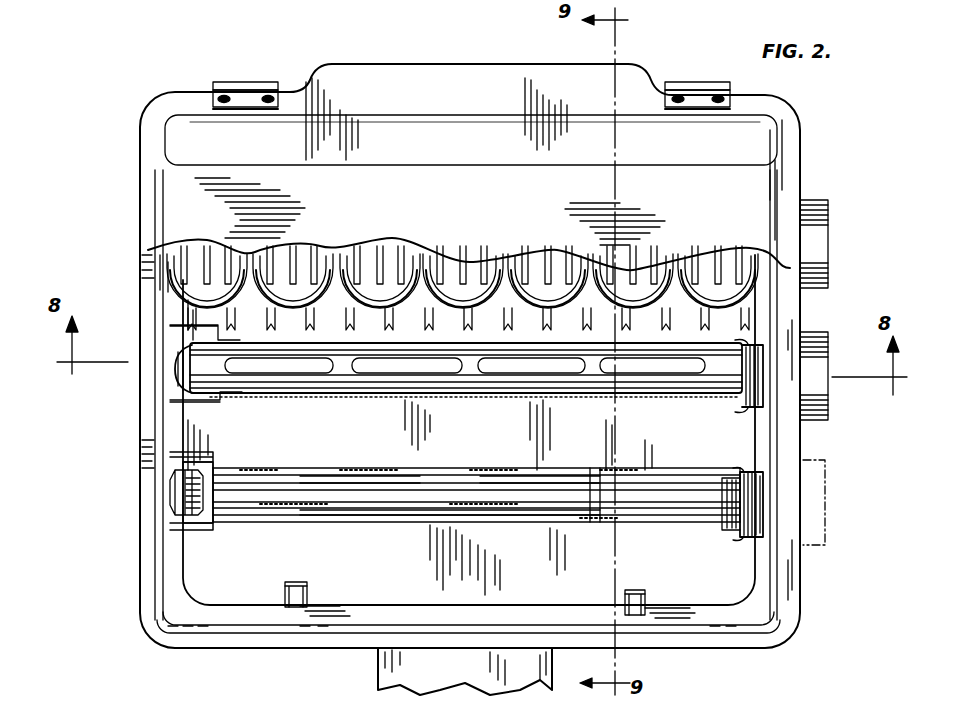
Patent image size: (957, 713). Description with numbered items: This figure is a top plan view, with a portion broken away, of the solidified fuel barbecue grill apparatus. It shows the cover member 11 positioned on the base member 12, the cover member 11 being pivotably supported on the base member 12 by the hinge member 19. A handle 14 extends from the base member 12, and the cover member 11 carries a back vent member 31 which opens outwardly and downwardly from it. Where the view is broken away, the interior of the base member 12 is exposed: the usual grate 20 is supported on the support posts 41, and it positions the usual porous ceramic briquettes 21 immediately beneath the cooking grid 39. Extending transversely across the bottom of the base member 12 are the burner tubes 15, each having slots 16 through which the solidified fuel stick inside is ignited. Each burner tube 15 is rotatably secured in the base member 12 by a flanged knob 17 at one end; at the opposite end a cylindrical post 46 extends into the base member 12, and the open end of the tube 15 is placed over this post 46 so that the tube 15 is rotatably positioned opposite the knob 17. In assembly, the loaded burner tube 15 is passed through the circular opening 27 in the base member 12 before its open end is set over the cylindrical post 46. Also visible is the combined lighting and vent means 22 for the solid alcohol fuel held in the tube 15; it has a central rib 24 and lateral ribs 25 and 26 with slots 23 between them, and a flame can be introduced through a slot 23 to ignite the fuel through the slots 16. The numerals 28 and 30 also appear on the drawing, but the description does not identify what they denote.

The cover member 11 is at (172, 197).
The base member 12 is at (142, 462).
The handle 14 is at (380, 676).
The burner tube 15 is at (395, 392).
The slot 16 is at (522, 370).
The knob 17 is at (830, 222).
The hinge member 19 is at (258, 84).
The grate 20 is at (186, 308).
The porous ceramic briquette 21 is at (190, 262).
The combined lighting and vent means 22 is at (292, 468).
The slot 23 is at (418, 478).
The central rib 24 is at (594, 500).
The lateral rib 25 is at (527, 475).
The lateral rib 26 is at (405, 518).
The circular opening 27 is at (725, 482).
The end cap 28 is at (760, 474).
The bracket 30 is at (172, 402).
The back vent member 31 is at (358, 64).
The cooking grid 39 is at (183, 267).
The support post 41 is at (297, 607).
The cylindrical post 46 is at (183, 506).